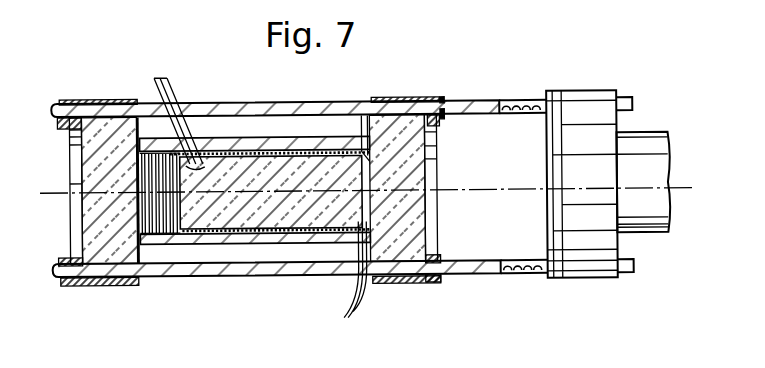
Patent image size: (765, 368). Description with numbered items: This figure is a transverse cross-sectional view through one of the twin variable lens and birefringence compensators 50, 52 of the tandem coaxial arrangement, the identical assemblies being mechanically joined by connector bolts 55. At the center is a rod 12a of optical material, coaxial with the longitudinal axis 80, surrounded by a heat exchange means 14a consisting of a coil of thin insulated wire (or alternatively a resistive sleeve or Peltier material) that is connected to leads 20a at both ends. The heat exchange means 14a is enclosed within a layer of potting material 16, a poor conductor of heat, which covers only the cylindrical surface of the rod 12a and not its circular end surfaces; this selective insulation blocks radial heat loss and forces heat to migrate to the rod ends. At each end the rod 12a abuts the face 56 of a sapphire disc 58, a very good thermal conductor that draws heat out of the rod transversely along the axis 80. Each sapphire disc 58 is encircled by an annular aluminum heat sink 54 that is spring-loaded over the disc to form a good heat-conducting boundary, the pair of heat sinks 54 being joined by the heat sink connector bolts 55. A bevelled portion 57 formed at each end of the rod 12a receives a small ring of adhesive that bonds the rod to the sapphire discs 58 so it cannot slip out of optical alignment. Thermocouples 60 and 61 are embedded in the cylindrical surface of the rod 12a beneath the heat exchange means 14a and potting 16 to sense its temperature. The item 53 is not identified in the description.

The variable lens and birefringence compensator 50 is at (55, 64).
The variable lens and birefringence compensator 52 is at (108, 66).
The retaining washer 53 is at (75, 100).
The annular aluminum heat sink 54 is at (140, 285).
The heat sink connector bolt 55 is at (517, 260).
The face of sapphire disc 56 is at (135, 215).
The bevelled portion 57 is at (358, 114).
The sapphire disc 58 is at (95, 160).
The thermocouple 60 is at (207, 143).
The thermocouple 61 is at (180, 70).
The potting material 16 is at (264, 138).
The rod 12a is at (272, 172).
The heat exchange means 14a is at (159, 237).
The longitudinal axis 80 is at (62, 194).
The lead 20a is at (375, 321).